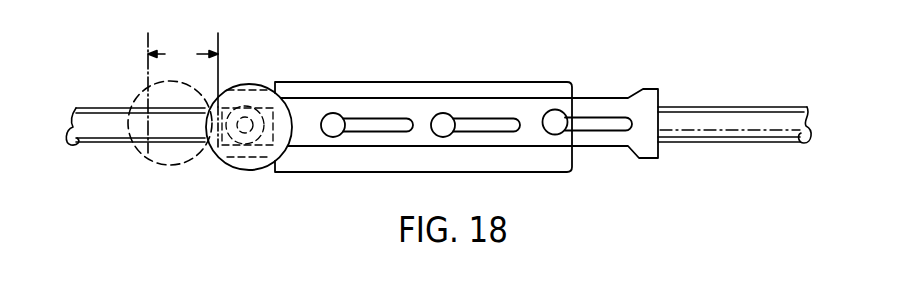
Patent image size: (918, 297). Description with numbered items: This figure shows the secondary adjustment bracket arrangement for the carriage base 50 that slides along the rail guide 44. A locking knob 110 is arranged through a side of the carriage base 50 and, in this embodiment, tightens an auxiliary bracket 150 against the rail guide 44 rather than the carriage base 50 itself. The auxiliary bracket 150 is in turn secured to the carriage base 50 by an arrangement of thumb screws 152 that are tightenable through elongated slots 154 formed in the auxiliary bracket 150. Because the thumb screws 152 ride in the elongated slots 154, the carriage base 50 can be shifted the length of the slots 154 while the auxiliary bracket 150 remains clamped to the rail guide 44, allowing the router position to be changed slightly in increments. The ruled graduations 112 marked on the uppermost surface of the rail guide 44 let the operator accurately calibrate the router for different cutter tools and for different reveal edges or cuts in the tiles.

The rail guide 44 is at (772, 118).
The carriage base 50 is at (572, 90).
The locking knob 110 is at (255, 83).
The ruled graduations 112 is at (722, 105).
The auxiliary bracket 150 is at (653, 88).
The thumb screws 152 is at (330, 113).
The elongated slots 154 is at (373, 120).